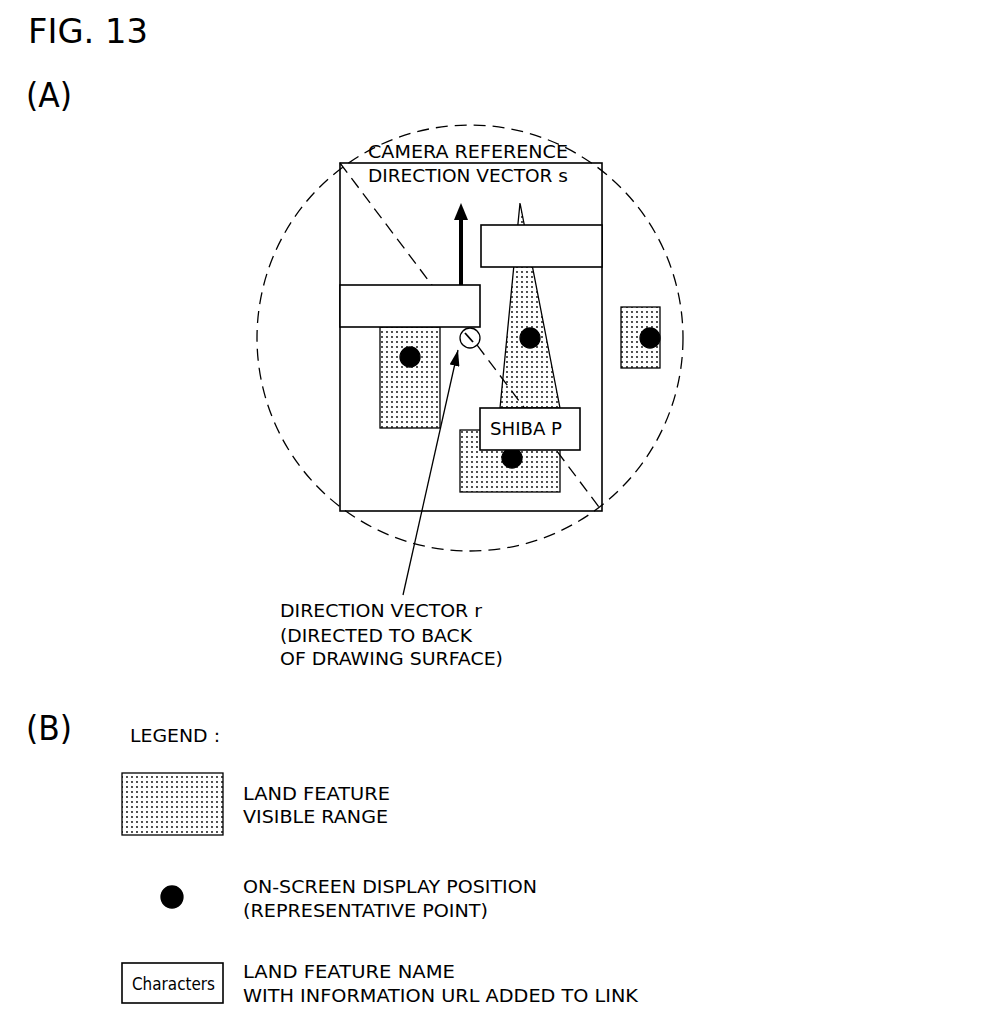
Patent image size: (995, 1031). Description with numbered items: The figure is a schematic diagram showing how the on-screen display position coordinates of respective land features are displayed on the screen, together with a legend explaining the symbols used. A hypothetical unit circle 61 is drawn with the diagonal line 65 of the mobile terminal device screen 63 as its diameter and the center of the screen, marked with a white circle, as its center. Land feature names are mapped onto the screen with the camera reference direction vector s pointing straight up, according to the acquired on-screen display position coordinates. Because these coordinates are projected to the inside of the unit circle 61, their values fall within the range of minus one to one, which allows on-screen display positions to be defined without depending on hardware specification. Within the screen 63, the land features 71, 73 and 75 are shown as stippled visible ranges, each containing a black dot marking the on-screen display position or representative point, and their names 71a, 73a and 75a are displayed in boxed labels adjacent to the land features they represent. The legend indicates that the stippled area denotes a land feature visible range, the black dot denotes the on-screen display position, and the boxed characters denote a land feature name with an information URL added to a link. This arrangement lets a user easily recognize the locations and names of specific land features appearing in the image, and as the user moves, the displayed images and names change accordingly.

The unit circle 61 is at (682, 412).
The mobile terminal device screen 63 is at (338, 368).
The diagonal line 65 is at (377, 243).
The land feature 71 is at (410, 362).
The name 71a is at (377, 285).
The land feature 73 is at (532, 337).
The name 73a is at (562, 225).
The land feature 75 is at (512, 470).
The name 75a is at (583, 408).